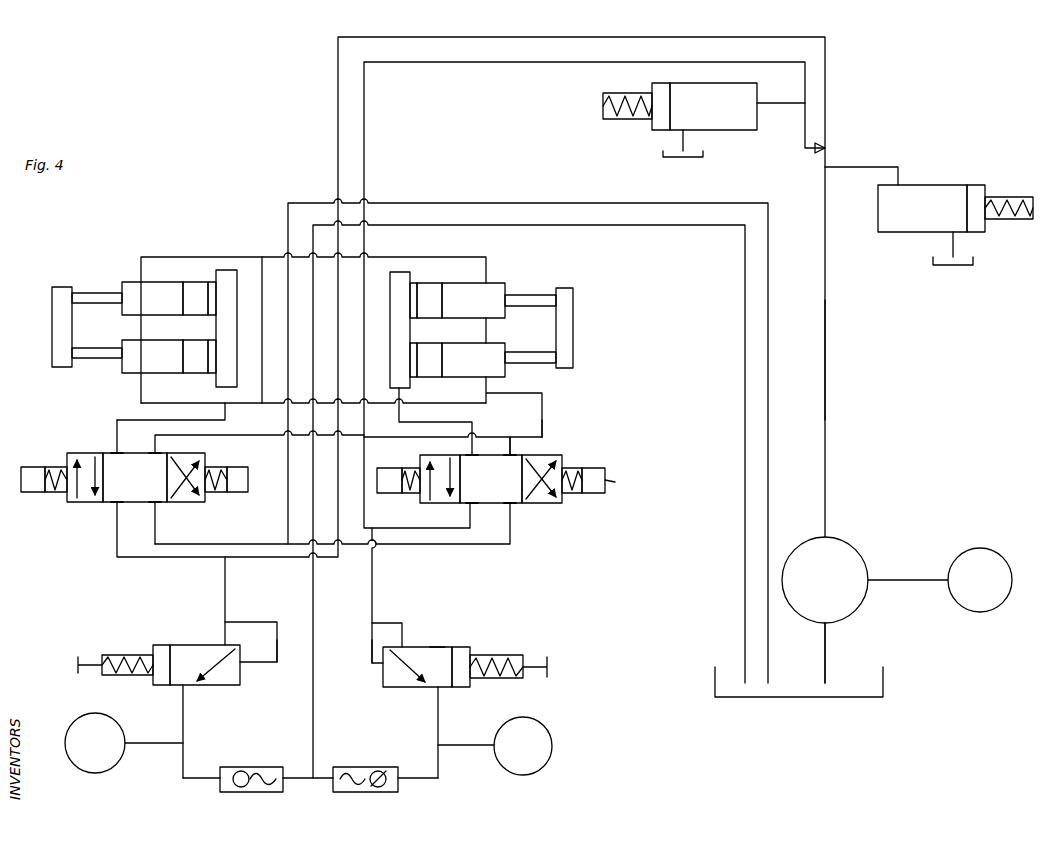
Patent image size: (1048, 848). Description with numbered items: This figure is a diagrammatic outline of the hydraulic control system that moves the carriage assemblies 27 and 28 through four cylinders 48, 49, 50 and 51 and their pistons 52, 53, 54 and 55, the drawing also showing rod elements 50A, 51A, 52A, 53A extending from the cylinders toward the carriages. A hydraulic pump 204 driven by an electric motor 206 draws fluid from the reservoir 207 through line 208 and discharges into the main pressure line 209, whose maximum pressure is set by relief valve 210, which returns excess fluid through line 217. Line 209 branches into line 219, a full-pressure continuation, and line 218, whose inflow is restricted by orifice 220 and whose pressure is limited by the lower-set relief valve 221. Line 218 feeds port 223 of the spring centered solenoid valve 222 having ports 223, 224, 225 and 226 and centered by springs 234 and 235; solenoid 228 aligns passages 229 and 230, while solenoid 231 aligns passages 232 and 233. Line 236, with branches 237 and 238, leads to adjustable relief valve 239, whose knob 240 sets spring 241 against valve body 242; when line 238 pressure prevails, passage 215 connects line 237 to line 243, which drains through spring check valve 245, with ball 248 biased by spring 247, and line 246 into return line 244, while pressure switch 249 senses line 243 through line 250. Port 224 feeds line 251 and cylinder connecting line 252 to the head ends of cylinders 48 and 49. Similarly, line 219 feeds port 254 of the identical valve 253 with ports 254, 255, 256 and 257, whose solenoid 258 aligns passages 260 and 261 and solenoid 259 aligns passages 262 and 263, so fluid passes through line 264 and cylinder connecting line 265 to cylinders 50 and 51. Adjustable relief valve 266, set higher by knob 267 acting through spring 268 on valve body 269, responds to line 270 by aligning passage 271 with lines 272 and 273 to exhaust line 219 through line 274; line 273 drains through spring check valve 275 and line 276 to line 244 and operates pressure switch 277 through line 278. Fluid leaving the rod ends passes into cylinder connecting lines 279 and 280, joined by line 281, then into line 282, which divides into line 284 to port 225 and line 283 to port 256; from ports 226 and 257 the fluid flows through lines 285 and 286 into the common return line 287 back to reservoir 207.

The carriage assembly 27 is at (563, 328).
The carriage assembly 28 is at (62, 327).
The cylinder 48 is at (488, 342).
The cylinder 49 is at (490, 284).
The cylinder 50 is at (133, 340).
The piston rod 50A is at (108, 360).
The cylinder 51 is at (132, 281).
The piston rod 51A is at (88, 290).
The piston 52 is at (426, 360).
The piston rod 52A is at (515, 364).
The piston 53 is at (426, 300).
The piston rod 53A is at (522, 294).
The piston 54 is at (199, 356).
The piston 55 is at (199, 298).
The hydraulic pump 204 is at (825, 580).
The electric motor 206 is at (940, 580).
The reservoir 207 is at (799, 682).
The line 208 is at (828, 647).
The main pressure line 209 is at (827, 398).
The relief valve 210 is at (928, 180).
The passage 215 is at (430, 656).
The line 217 is at (962, 252).
The fluid line 218 is at (552, 64).
The fluid line 219 is at (828, 104).
The orifice 220 is at (812, 152).
The relief valve 221 is at (716, 80).
The spring centered solenoid valve 222 is at (556, 508).
The port 223 is at (478, 494).
The port 224 is at (478, 467).
The port 225 is at (510, 467).
The port 226 is at (510, 494).
The solenoid 228 is at (384, 468).
The passage 229 is at (428, 505).
The passage 230 is at (440, 458).
The solenoid 231 is at (623, 488).
The passage 232 is at (560, 457).
The passage 233 is at (552, 502).
The spring 234 is at (574, 468).
The spring 235 is at (408, 494).
The line 236 is at (374, 582).
The line 237 is at (390, 622).
The line 238 is at (370, 637).
The adjustable relief valve 239 is at (430, 645).
The adjustment knob 240 is at (546, 660).
The spring 241 is at (490, 680).
The valve body 242 is at (405, 668).
The line 243 is at (436, 708).
The return line 244 is at (314, 688).
The spring check valve 245 is at (366, 766).
The line 246 is at (334, 772).
The spring 247 is at (300, 784).
The ball 248 is at (402, 788).
The pressure switch 249 is at (523, 746).
The line 250 is at (450, 746).
The line 251 is at (468, 421).
The cylinder connecting line 252 is at (392, 337).
The spring centered solenoid valve 253 is at (78, 504).
The port 254 is at (120, 492).
The port 255 is at (120, 466).
The port 256 is at (155, 466).
The port 257 is at (155, 492).
The solenoid 258 is at (34, 467).
The solenoid 259 is at (225, 467).
The passage 260 is at (64, 494).
The passage 261 is at (92, 454).
The passage 262 is at (190, 454).
The passage 263 is at (180, 504).
The line 264 is at (138, 418).
The cylinder connecting line 265 is at (232, 336).
The adjustable relief valve 266 is at (168, 644).
The adjustment knob 267 is at (94, 662).
The spring 268 is at (130, 678).
The valve body 269 is at (216, 665).
The line 270 is at (279, 668).
The passage 271 is at (205, 665).
The line 272 is at (222, 638).
The line 273 is at (180, 716).
The line 274 is at (222, 594).
The spring check valve 275 is at (252, 766).
The line 276 is at (295, 766).
The pressure switch 277 is at (95, 743).
The line 278 is at (168, 745).
The cylinder connecting line 279 is at (196, 402).
The cylinder connecting line 280 is at (190, 256).
The line 281 is at (260, 256).
The line 282 is at (544, 410).
The line 283 is at (222, 436).
The line 284 is at (512, 447).
The line 285 is at (462, 547).
The line 286 is at (202, 546).
The common return line 287 is at (452, 204).